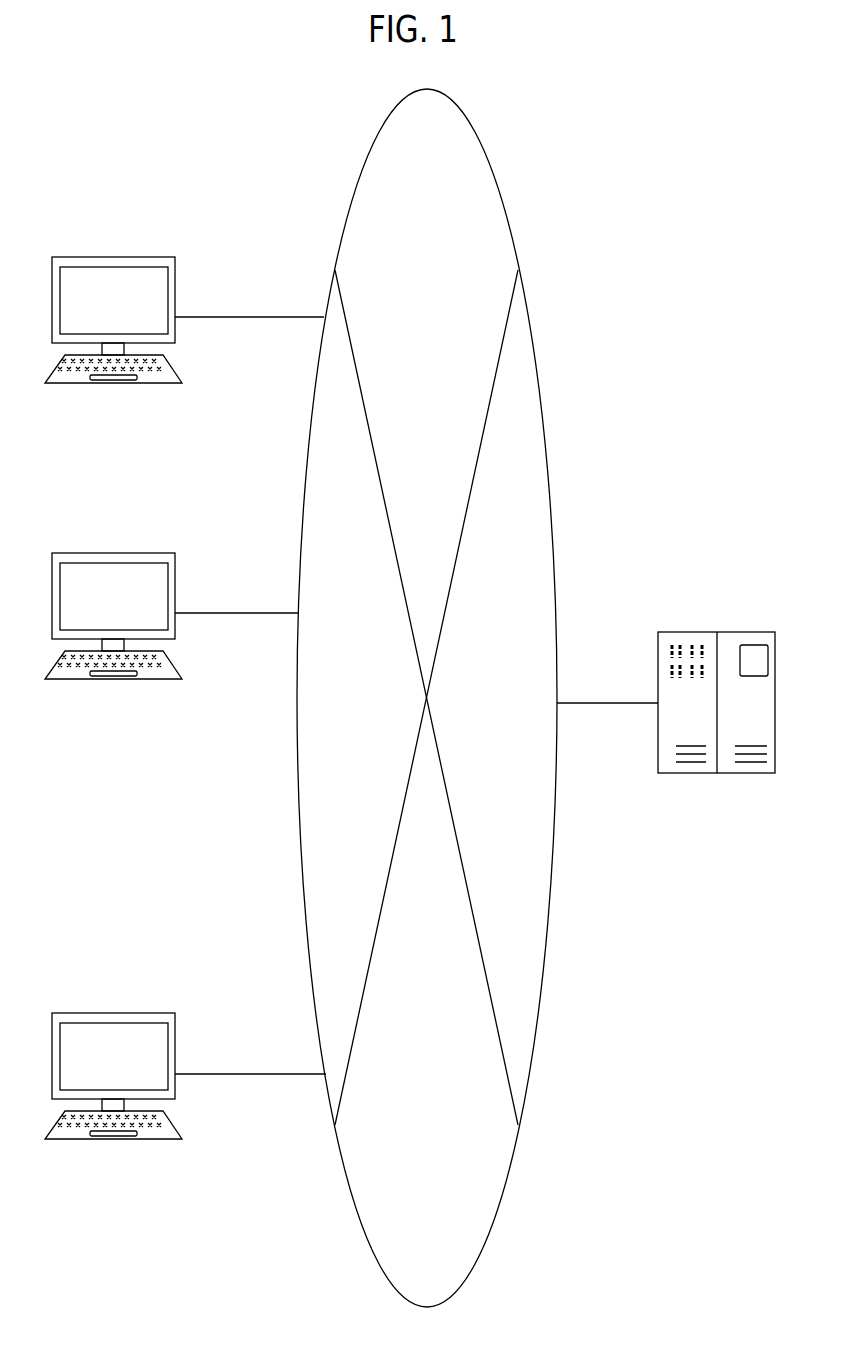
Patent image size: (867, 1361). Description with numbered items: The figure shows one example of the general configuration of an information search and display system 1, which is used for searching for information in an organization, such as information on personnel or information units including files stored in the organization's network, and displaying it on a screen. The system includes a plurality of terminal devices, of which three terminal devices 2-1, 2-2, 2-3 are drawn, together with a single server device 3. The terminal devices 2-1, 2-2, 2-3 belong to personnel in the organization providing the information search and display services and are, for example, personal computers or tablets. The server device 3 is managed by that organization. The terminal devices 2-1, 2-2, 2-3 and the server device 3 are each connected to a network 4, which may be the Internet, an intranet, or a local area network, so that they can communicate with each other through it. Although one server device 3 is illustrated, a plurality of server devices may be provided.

The information search and display system 1 is at (644, 207).
The terminal device 2-1 is at (112, 257).
The terminal device 2-2 is at (112, 553).
The terminal device 2-3 is at (112, 1013).
The server device 3 is at (728, 632).
The network 4 is at (487, 157).